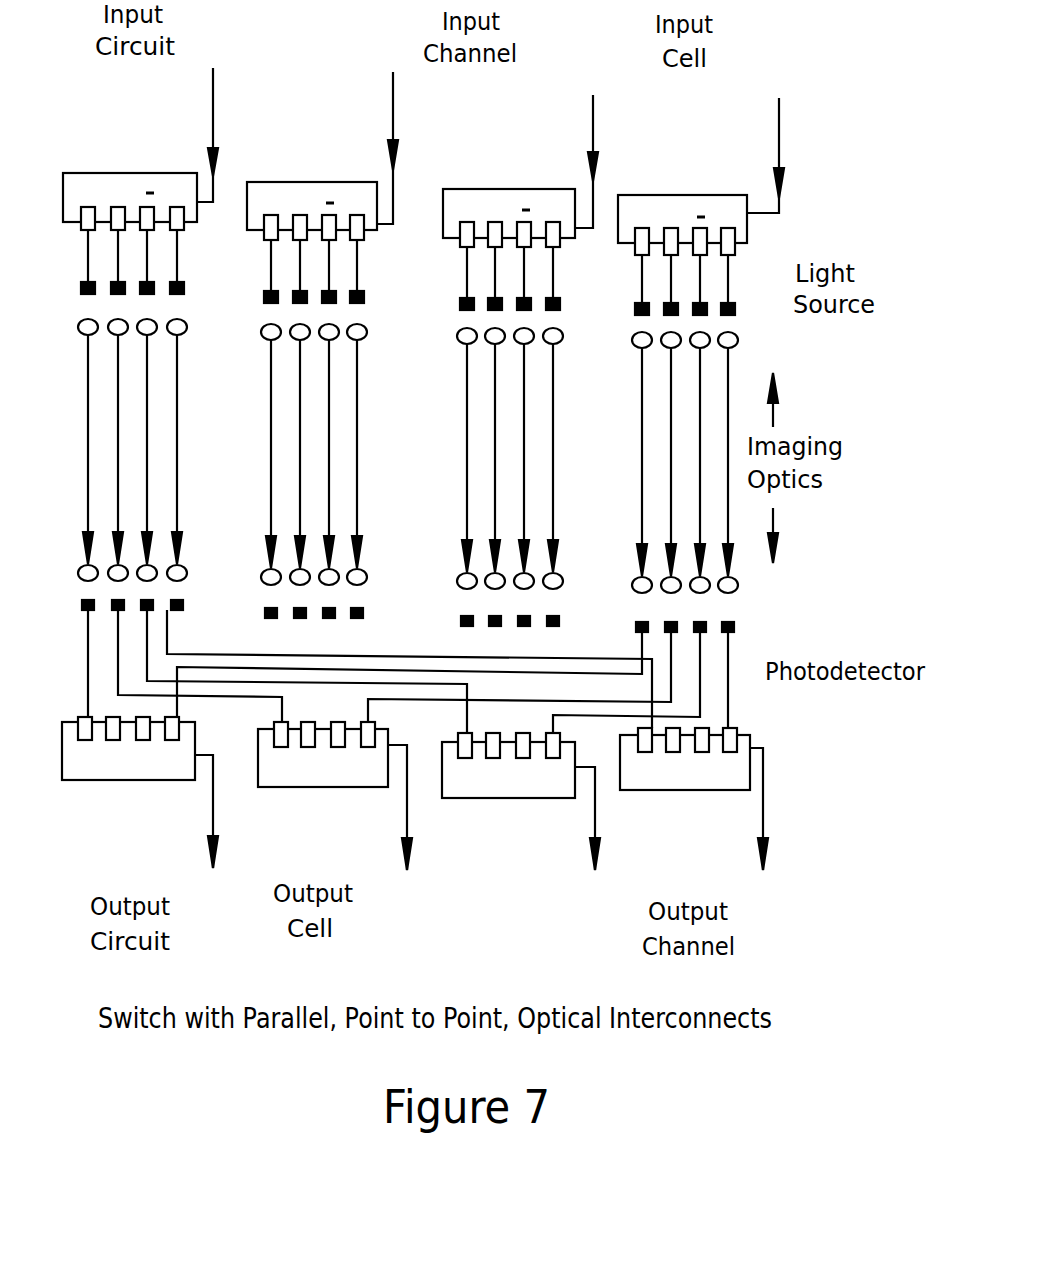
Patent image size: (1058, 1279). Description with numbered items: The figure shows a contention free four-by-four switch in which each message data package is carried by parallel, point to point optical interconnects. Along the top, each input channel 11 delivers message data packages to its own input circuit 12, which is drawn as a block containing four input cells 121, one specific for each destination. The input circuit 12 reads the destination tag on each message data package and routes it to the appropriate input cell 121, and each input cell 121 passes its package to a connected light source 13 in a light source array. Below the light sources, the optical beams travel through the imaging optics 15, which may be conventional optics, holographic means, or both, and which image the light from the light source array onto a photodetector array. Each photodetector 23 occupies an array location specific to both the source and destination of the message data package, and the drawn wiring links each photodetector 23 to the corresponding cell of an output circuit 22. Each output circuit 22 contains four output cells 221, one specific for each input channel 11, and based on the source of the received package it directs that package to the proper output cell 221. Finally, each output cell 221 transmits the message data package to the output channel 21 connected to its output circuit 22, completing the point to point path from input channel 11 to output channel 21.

The input circuit 12 is at (123, 179).
The input channel 11 is at (394, 97).
The input cell 121 is at (643, 240).
The light source 13 is at (735, 309).
The imaging optics 15 is at (728, 340).
The photodetector 23 is at (734, 627).
The output circuit 22 is at (122, 780).
The output cell 221 is at (306, 787).
The output channel 21 is at (596, 855).